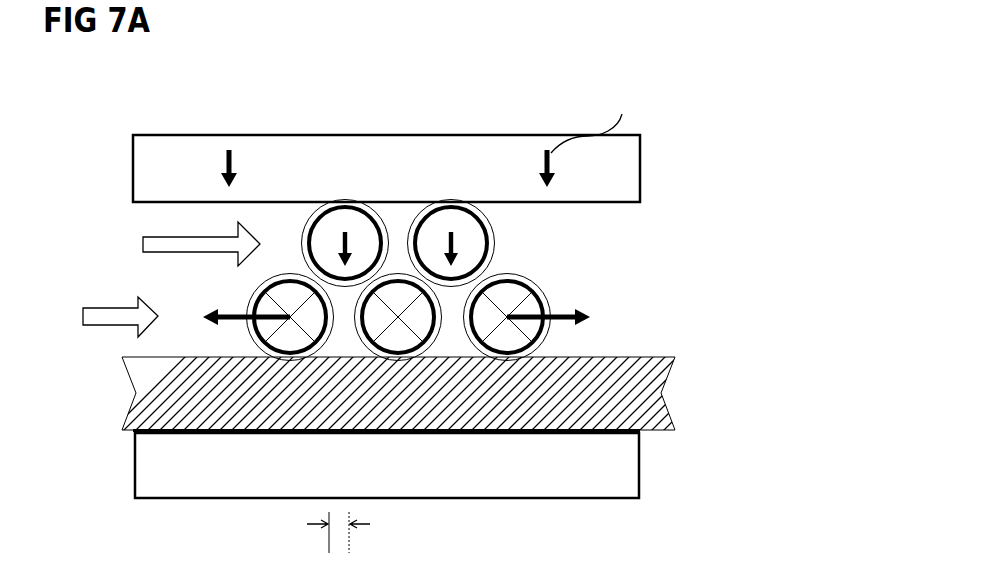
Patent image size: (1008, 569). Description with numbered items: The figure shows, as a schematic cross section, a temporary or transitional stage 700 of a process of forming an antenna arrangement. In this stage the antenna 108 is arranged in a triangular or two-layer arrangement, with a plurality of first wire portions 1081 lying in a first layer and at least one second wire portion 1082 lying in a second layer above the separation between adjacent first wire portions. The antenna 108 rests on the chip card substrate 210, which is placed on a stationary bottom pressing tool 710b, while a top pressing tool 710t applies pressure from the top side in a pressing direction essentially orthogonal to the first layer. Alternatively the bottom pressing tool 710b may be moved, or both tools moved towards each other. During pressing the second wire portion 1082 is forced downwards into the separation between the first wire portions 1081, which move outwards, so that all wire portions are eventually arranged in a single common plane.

The stage 700 is at (793, 76).
The top pressing tool 710t is at (267, 149).
The bottom pressing tool 710b is at (512, 482).
The antenna 108 is at (515, 280).
The second wire portion 1082 is at (475, 240).
The first wire portions 1081 is at (513, 310).
The chip card substrate 210 is at (647, 380).